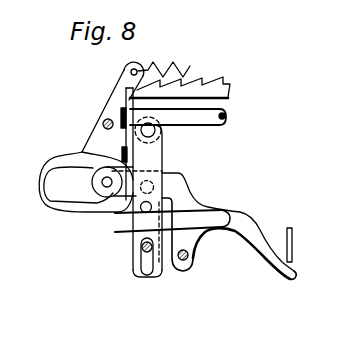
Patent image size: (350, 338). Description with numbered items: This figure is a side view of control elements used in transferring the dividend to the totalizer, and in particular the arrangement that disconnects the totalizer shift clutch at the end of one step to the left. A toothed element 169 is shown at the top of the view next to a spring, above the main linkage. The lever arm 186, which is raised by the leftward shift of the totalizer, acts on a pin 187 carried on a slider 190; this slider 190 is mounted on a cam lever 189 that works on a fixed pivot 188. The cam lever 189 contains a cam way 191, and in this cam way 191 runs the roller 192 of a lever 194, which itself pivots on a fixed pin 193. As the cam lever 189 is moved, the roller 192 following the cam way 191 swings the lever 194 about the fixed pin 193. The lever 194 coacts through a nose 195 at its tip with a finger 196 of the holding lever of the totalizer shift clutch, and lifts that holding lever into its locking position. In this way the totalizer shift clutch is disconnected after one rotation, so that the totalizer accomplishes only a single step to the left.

The toothed rack 169 is at (216, 89).
The lever arm 186 is at (198, 217).
The pin 187 is at (145, 209).
The fixed pivot 188 is at (104, 123).
The cam lever 189 is at (88, 152).
The slider 190 is at (155, 160).
The cam way 191 is at (58, 185).
The roller 192 is at (93, 191).
The fixed pin 193 is at (185, 262).
The lever 194 is at (243, 217).
The nose 195 is at (296, 275).
The finger 196 is at (293, 250).